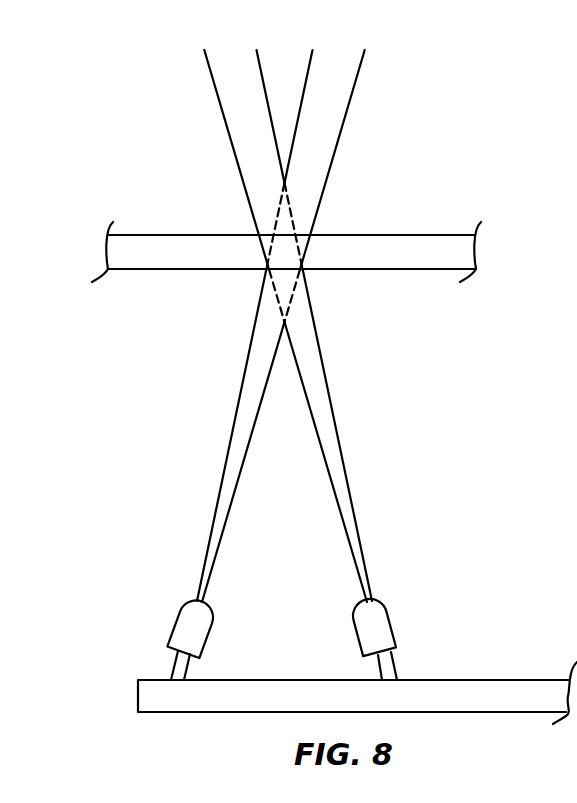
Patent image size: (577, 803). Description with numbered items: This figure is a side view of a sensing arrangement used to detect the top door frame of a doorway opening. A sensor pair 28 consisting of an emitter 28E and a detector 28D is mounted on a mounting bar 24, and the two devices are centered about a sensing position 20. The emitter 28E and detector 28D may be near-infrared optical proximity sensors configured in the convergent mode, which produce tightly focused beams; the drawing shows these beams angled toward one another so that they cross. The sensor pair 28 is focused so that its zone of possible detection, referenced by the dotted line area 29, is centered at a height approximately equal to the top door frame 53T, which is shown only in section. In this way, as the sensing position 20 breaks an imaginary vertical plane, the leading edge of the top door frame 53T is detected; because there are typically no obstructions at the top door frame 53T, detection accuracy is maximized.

The sensing position 20 is at (200, 709).
The mounting bar 24 is at (525, 680).
The sensor pair 28 is at (140, 613).
The detector 28D is at (211, 630).
The emitter 28E is at (388, 617).
The dotted line area 29 is at (296, 284).
The top door frame 53T is at (398, 235).